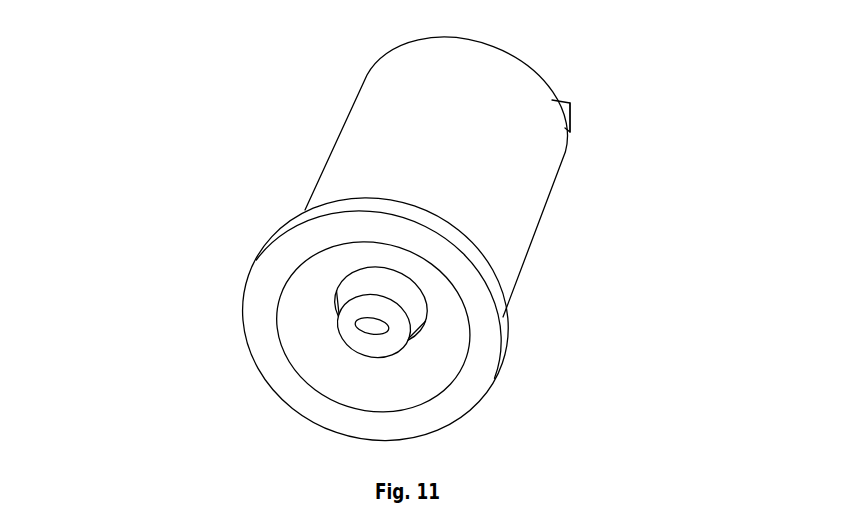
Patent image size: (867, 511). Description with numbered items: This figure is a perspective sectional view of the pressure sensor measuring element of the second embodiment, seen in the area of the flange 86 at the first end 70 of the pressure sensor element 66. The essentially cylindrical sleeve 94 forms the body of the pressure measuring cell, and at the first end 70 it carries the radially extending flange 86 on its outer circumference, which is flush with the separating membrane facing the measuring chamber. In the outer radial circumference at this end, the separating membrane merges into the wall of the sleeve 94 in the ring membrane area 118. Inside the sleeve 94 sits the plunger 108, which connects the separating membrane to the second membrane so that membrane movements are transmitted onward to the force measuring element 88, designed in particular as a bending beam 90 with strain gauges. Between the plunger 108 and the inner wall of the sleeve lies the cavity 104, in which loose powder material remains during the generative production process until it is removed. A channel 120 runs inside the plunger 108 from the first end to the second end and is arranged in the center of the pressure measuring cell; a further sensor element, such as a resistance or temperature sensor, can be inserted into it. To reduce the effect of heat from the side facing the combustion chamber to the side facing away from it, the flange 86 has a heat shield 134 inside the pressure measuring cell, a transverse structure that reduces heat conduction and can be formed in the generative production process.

The pressure sensor element 66 is at (112, 58).
The first end 70 is at (183, 265).
The flange 86 is at (493, 287).
The force measuring element 88 is at (571, 132).
The bending beam 90 is at (570, 115).
The sleeve 94 is at (520, 217).
The cavity 104 is at (352, 287).
The plunger 108 is at (408, 300).
The ring membrane area 118 is at (485, 335).
The channel 120 is at (370, 325).
The heat shield 134 is at (308, 337).